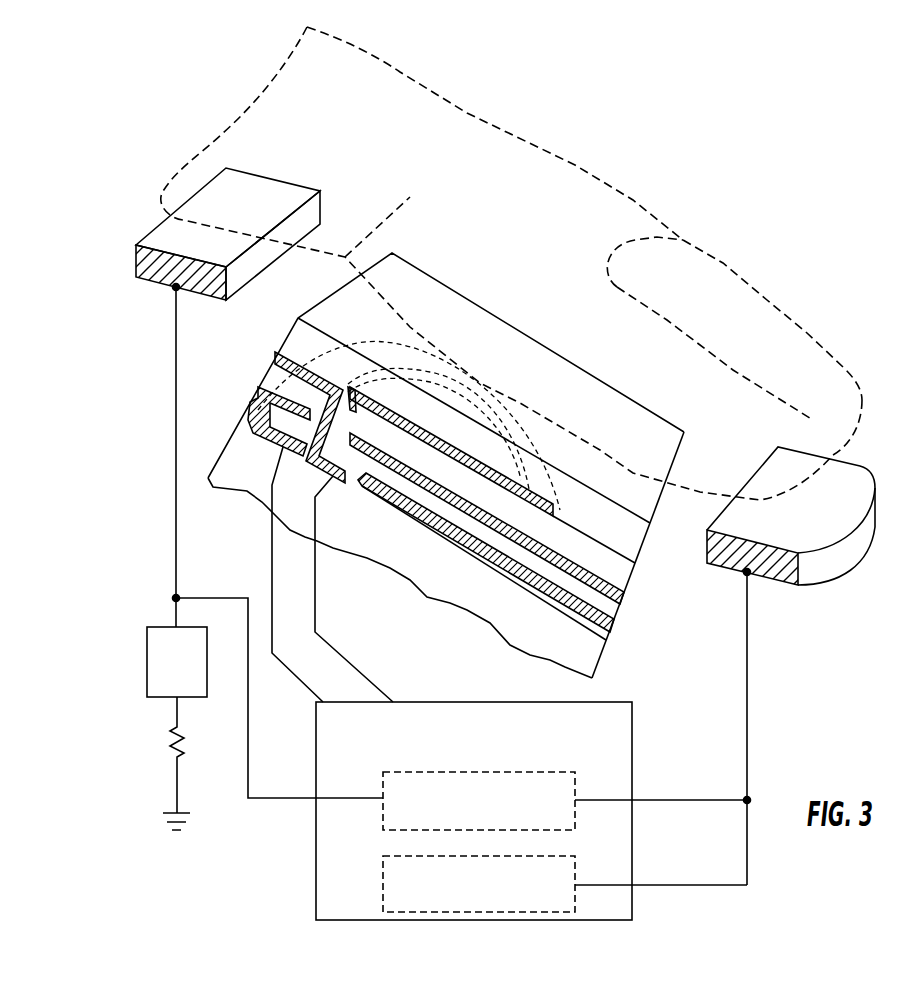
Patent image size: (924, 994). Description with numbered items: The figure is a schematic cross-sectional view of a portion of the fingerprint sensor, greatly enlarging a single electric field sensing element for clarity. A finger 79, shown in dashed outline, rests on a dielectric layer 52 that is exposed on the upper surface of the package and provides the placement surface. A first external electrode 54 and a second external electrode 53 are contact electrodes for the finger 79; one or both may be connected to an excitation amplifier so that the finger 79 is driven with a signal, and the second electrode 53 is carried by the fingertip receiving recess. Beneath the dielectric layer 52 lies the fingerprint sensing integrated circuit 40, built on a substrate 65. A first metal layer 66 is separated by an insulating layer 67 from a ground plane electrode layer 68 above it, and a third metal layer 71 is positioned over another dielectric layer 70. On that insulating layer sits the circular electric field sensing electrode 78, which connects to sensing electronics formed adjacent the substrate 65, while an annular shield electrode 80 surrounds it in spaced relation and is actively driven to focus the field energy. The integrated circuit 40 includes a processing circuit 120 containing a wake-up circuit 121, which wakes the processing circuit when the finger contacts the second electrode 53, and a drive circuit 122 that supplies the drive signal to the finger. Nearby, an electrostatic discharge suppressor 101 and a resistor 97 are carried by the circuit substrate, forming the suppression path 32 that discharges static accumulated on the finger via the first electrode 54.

The ESD suppression circuit 32 is at (146, 613).
The fingerprint sensing integrated circuit 40 is at (712, 648).
The dielectric layer 52 is at (328, 320).
The second external electrode 53 is at (843, 545).
The first external electrode 54 is at (143, 267).
The substrate 65 is at (600, 664).
The first metal layer 66 is at (612, 616).
The insulating layer 67 is at (612, 608).
The ground plane electrode layer 68 is at (607, 582).
The dielectric layer 70 is at (270, 372).
The third metal layer 71 is at (278, 350).
The electric field sensing electrode 78 is at (430, 443).
The finger 79 is at (577, 165).
The shield electrode 80 is at (250, 410).
The resistor 97 is at (167, 756).
The electrostatic discharge suppressor 101 is at (147, 672).
The processing circuit 120 is at (632, 760).
The wake-up circuit 121 is at (383, 884).
The drive circuit 122 is at (383, 822).